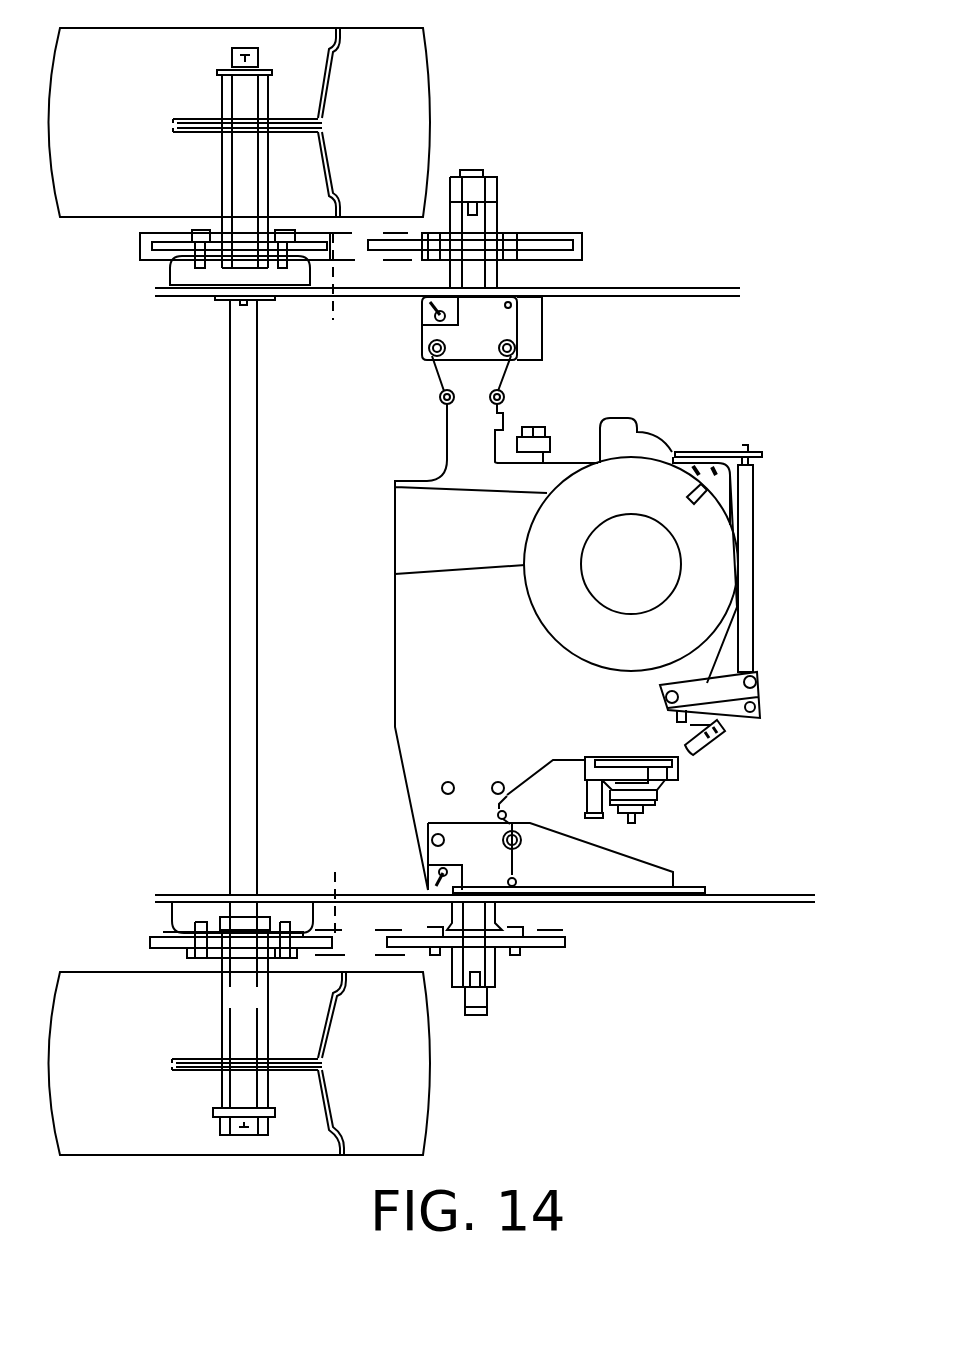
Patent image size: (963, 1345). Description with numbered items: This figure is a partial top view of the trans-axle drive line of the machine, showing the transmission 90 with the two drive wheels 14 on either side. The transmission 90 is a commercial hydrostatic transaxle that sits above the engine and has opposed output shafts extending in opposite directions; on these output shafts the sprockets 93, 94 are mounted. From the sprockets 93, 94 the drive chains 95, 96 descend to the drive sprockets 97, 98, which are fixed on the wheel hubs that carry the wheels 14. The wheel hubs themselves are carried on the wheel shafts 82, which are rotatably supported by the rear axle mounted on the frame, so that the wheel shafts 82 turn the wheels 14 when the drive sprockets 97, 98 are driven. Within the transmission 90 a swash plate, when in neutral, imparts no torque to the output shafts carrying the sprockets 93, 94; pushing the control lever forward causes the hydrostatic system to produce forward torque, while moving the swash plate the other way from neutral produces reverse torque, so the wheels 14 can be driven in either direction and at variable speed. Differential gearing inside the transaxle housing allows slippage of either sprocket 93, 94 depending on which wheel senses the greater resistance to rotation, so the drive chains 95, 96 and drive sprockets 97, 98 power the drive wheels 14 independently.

The wheels 14 is at (115, 132).
The wheel shafts 82 is at (220, 1006).
The transmission 90 is at (485, 692).
The sprocket 93 is at (540, 233).
The sprocket 94 is at (553, 955).
The drive chain 95 is at (366, 294).
The drive chain 96 is at (334, 889).
The drive sprocket 97 is at (163, 247).
The drive sprocket 98 is at (163, 938).